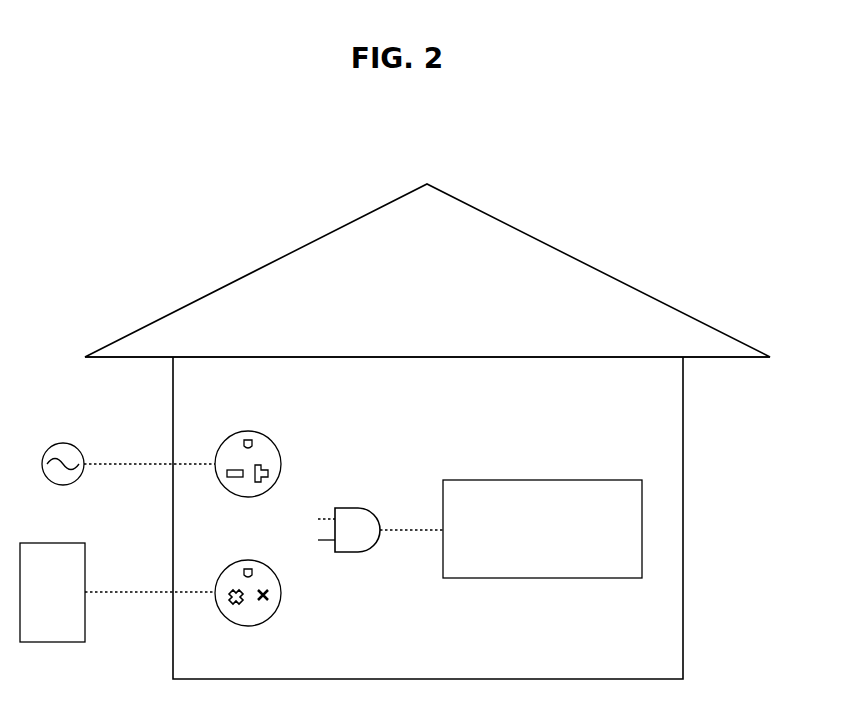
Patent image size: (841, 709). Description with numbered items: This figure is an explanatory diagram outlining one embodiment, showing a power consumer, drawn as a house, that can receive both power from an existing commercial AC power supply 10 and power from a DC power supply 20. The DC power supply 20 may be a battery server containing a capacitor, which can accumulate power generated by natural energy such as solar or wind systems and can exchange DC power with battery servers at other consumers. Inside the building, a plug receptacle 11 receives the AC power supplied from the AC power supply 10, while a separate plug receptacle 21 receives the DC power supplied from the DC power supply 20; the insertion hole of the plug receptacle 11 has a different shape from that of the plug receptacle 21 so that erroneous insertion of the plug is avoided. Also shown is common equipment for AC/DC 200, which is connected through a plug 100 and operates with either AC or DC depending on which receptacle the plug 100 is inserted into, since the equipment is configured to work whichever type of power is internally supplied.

The AC power supply 10 is at (65, 443).
The plug receptacle 11 is at (247, 431).
The DC power supply 20 is at (68, 541).
The plug receptacle 21 is at (247, 560).
The plug 100 is at (357, 507).
The common equipment for AC/DC 200 is at (557, 478).